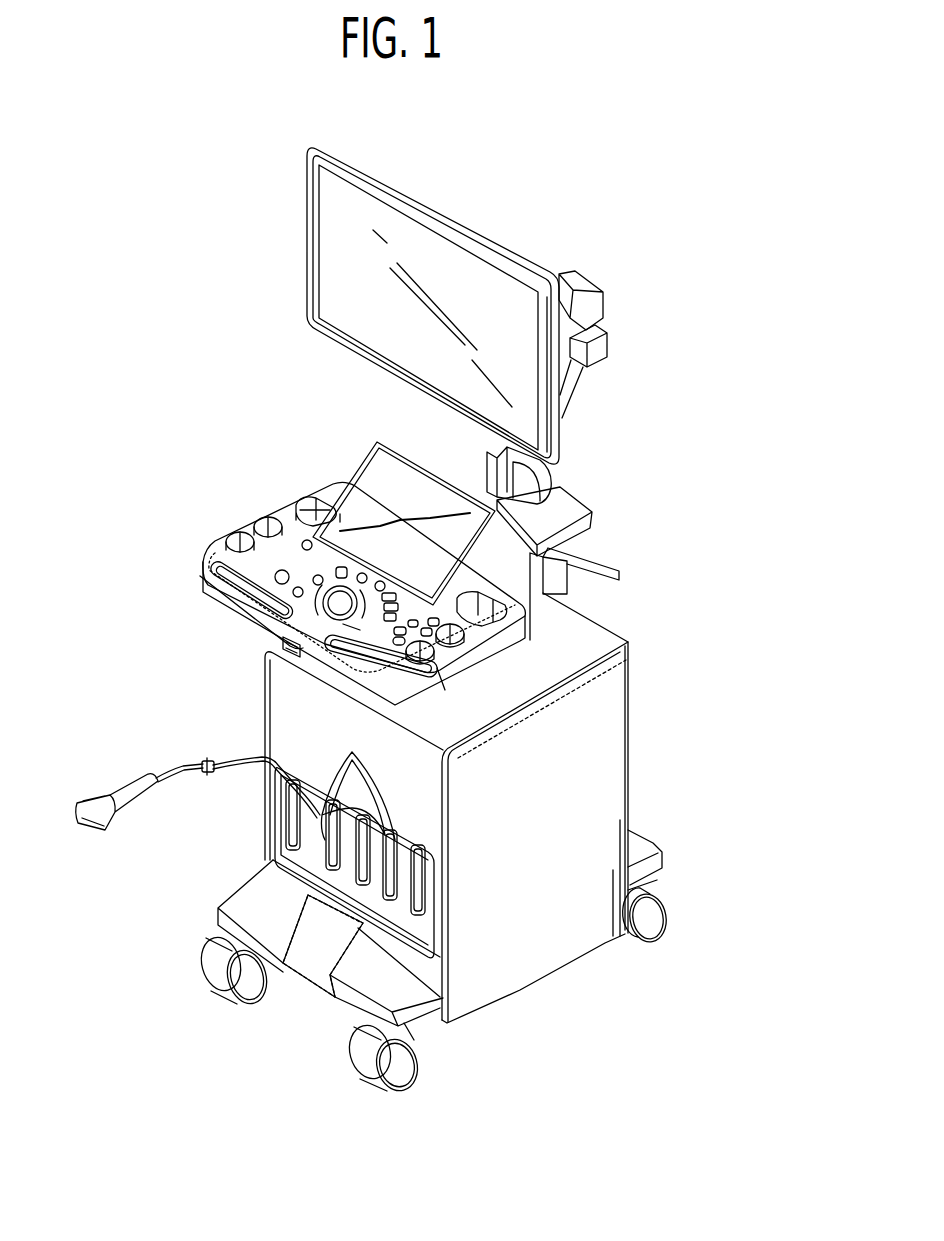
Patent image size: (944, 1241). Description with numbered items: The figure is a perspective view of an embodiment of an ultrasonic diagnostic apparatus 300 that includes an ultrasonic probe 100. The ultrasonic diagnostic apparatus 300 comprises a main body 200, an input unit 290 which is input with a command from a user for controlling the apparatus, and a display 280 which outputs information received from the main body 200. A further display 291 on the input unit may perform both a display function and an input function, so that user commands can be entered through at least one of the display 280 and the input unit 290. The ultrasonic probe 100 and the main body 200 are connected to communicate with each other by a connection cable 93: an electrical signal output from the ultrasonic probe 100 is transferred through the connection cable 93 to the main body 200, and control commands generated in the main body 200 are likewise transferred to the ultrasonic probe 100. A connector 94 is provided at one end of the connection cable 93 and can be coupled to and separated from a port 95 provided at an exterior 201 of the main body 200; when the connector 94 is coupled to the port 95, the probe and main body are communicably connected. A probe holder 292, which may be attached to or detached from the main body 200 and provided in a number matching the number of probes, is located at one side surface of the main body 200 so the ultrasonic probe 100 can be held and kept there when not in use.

The ultrasonic diagnostic apparatus 300 is at (117, 141).
The display 280 is at (448, 218).
The main body 200 is at (652, 667).
The exterior 201 is at (600, 780).
The input unit 290 is at (208, 544).
The display 291 is at (370, 473).
The probe holder 292 is at (265, 512).
The connector 94 is at (273, 822).
The port 95 is at (353, 762).
The ultrasonic probe 100 is at (83, 800).
The connection cable 93 is at (180, 763).